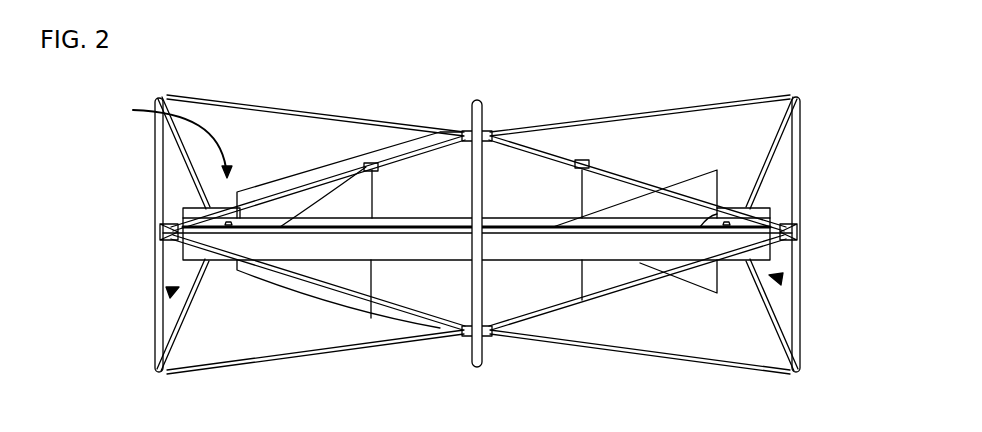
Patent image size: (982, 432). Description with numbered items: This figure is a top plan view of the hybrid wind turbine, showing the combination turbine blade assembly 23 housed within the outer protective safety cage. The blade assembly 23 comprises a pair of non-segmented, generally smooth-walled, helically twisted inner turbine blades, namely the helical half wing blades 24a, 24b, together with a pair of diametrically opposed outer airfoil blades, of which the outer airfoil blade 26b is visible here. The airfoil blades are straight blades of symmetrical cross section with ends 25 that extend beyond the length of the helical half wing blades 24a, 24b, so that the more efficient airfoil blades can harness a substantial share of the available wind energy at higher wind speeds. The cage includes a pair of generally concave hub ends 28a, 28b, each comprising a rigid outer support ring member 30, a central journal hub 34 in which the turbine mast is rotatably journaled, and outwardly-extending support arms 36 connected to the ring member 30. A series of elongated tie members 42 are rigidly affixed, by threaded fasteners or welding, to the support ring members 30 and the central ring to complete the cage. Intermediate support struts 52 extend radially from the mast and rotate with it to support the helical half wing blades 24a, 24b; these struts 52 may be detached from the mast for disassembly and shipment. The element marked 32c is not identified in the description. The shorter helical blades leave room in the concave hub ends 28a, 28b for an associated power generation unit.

The combination turbine blade assembly 23 is at (157, 98).
The helical half wing blade 24a is at (348, 193).
The helical half wing blade 24b is at (560, 285).
The ends of airfoil blades 25 is at (183, 233).
The outer airfoil blade 26b is at (716, 225).
The hub end 28a is at (782, 279).
The hub end 28b is at (168, 292).
The outer support ring member 30 is at (156, 272).
The central mast 32c is at (480, 102).
The central journal hub 34 is at (218, 232).
The support arms 36 is at (182, 160).
The elongated tie members 42 is at (610, 285).
The intermediate support struts 52 is at (373, 166).